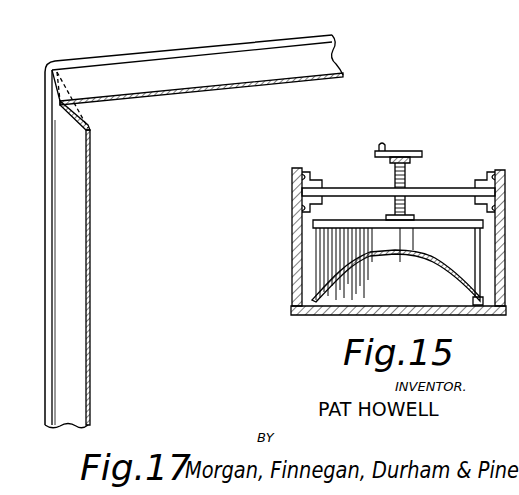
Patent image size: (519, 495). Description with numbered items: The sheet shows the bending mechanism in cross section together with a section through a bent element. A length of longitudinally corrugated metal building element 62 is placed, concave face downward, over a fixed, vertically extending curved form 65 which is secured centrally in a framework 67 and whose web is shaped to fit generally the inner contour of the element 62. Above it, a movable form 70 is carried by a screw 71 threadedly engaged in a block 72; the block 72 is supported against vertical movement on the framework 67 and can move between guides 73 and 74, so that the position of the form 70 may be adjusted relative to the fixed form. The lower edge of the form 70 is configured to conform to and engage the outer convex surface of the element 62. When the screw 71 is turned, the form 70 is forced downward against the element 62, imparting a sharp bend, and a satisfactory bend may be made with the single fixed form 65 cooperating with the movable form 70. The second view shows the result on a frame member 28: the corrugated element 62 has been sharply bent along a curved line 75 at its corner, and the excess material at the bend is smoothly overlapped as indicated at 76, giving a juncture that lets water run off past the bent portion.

In FIG. 17, the door frame member 28 is at (226, 46).
In FIG. 17, the corrugated building element 62 is at (213, 91).
In FIG. 15, the corrugated building element 62 is at (406, 258).
In FIG. 15, the form 65 is at (360, 290).
In FIG. 15, the framework 67 is at (292, 267).
In FIG. 15, the movable form 70 is at (350, 240).
In FIG. 15, the screw 71 is at (408, 175).
In FIG. 15, the block 72 is at (353, 193).
In FIG. 15, the guide 73 is at (304, 170).
In FIG. 15, the guide 74 is at (300, 203).
In FIG. 17, the curved line 75 is at (58, 90).
In FIG. 17, the overlapped excess material 76 is at (84, 115).